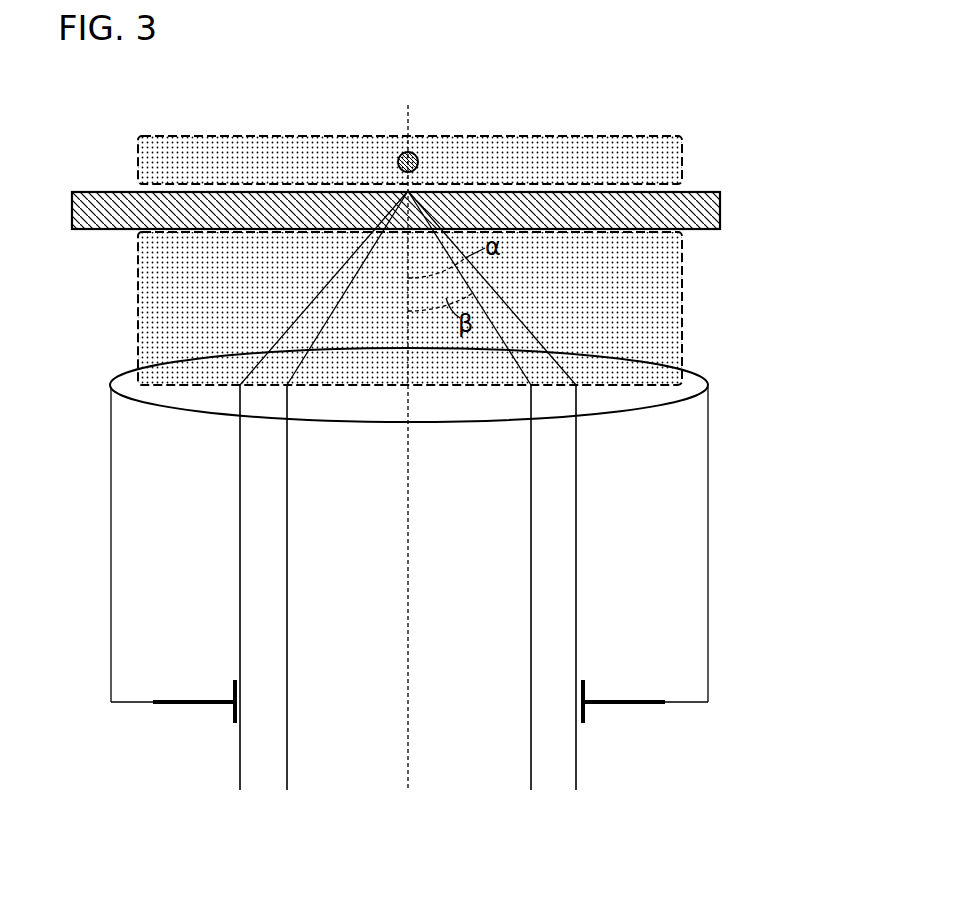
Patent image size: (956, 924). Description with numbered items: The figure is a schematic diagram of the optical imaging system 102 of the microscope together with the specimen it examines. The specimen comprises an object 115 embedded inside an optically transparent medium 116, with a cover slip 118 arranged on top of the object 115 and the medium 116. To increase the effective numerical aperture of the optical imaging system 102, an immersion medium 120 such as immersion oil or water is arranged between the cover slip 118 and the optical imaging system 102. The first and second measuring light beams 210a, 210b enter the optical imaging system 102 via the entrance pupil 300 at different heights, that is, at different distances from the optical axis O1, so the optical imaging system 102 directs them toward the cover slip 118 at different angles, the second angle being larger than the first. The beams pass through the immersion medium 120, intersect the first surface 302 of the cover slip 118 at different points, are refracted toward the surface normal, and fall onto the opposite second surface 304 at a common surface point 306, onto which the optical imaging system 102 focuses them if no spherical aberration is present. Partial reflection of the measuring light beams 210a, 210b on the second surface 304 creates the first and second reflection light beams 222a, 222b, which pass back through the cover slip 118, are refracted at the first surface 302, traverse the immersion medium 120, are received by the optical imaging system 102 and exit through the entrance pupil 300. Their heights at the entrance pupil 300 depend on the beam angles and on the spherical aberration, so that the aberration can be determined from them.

The optical imaging system 102 is at (712, 385).
The object 115 is at (397, 155).
The optically transparent medium 116 is at (398, 159).
The cover slip 118 is at (722, 210).
The immersion medium 120 is at (399, 307).
The first measuring light beam 210a is at (529, 488).
The second measuring light beam 210b is at (580, 488).
The first reflection light beam 222a is at (289, 488).
The second reflection light beam 222b is at (239, 488).
The entrance pupil 300 is at (624, 700).
The first surface 302 is at (697, 230).
The second surface 304 is at (692, 190).
The surface point 306 is at (410, 184).
The optical axis O1 is at (411, 763).